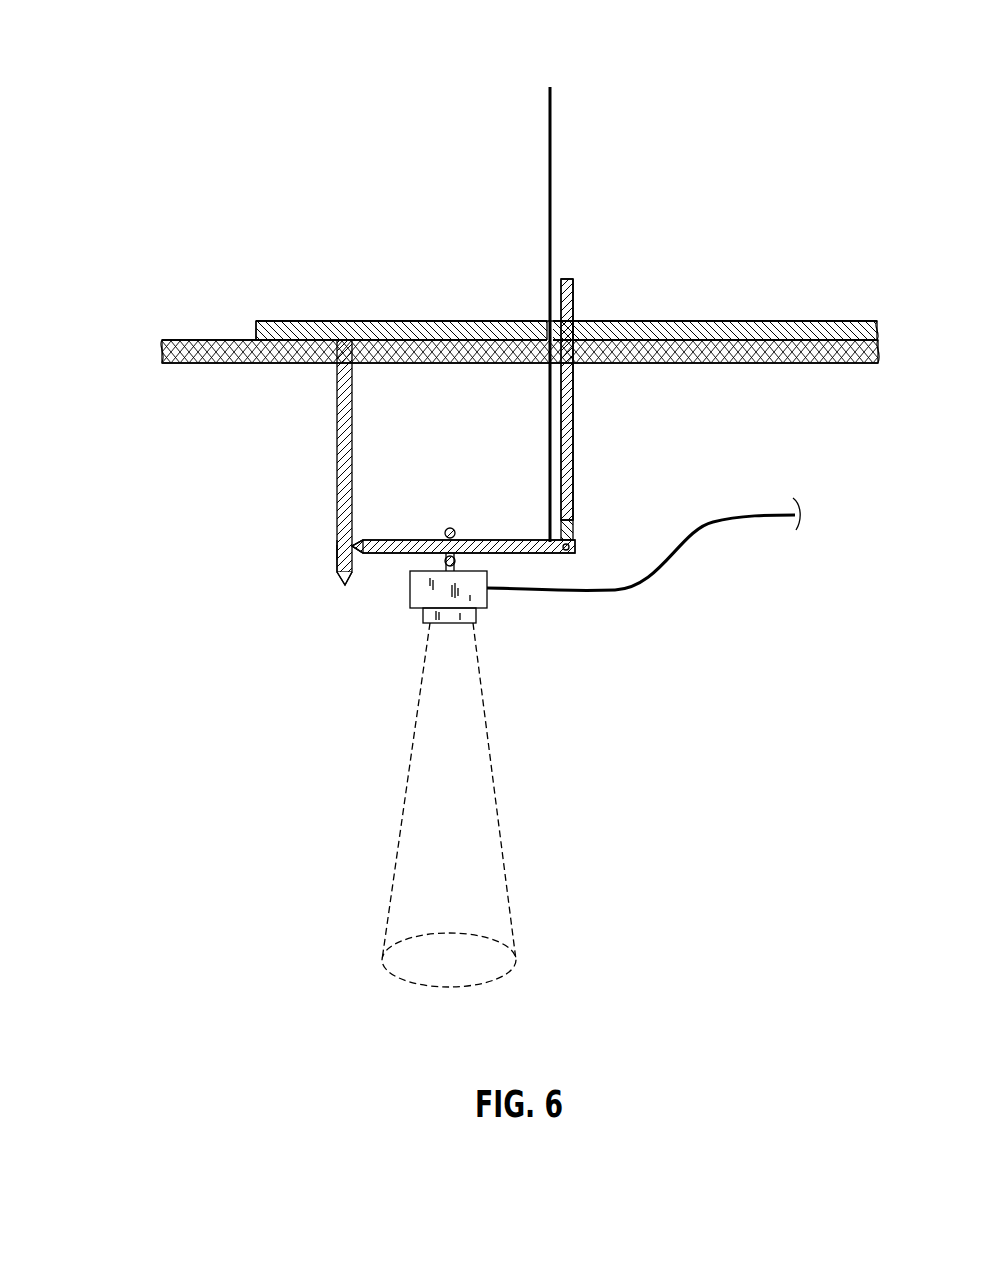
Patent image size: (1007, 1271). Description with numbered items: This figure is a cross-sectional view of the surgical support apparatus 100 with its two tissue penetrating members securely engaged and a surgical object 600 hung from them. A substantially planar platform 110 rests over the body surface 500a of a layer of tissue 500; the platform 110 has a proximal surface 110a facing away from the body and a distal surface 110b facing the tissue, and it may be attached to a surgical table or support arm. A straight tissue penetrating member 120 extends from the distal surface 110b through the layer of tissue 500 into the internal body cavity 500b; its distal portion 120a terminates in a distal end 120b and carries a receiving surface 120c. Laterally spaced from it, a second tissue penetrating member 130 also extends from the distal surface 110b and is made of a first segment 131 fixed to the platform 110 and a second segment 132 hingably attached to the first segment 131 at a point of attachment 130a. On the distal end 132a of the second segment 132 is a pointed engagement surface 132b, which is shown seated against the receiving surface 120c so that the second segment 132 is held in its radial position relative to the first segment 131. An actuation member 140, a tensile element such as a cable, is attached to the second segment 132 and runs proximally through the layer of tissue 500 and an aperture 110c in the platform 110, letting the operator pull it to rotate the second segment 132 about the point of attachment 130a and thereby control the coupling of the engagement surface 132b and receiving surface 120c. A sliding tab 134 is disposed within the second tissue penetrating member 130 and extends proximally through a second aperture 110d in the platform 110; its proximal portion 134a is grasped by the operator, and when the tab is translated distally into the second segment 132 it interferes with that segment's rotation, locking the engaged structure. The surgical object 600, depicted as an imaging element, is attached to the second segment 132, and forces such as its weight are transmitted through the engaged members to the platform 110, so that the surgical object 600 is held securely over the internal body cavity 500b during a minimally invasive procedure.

The surgical support apparatus 100 is at (244, 109).
The platform 110 is at (256, 330).
The proximal surface 110a is at (305, 321).
The distal surface 110b is at (297, 348).
The aperture 110c is at (548, 330).
The aperture 110d is at (578, 330).
The tissue penetrating member 120 is at (312, 453).
The distal portion 120a is at (318, 543).
The distal end 120b is at (344, 582).
The receiving surface 120c is at (337, 548).
The tissue penetrating member 130 is at (690, 456).
The point of attachment 130a is at (577, 546).
The first segment 131 is at (575, 440).
The second segment 132 is at (520, 553).
The distal end 132a is at (365, 555).
The engagement surface 132b is at (354, 544).
The sliding tab 134 is at (575, 490).
The proximal portion 134a is at (576, 296).
The actuation member 140 is at (552, 213).
The layer of tissue 500 is at (162, 352).
The body surface 500a is at (170, 338).
The internal body cavity 500b is at (174, 396).
The surgical object 600 is at (476, 620).